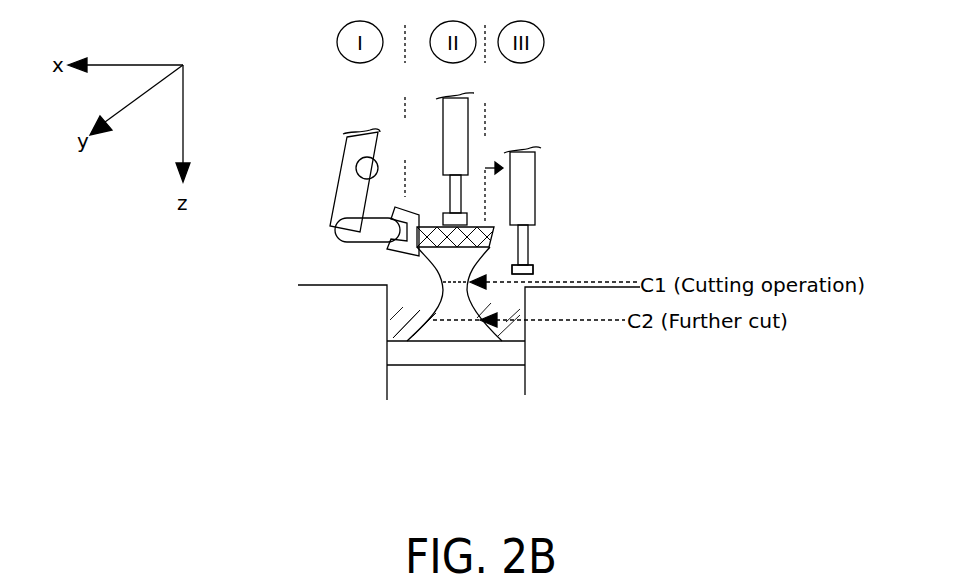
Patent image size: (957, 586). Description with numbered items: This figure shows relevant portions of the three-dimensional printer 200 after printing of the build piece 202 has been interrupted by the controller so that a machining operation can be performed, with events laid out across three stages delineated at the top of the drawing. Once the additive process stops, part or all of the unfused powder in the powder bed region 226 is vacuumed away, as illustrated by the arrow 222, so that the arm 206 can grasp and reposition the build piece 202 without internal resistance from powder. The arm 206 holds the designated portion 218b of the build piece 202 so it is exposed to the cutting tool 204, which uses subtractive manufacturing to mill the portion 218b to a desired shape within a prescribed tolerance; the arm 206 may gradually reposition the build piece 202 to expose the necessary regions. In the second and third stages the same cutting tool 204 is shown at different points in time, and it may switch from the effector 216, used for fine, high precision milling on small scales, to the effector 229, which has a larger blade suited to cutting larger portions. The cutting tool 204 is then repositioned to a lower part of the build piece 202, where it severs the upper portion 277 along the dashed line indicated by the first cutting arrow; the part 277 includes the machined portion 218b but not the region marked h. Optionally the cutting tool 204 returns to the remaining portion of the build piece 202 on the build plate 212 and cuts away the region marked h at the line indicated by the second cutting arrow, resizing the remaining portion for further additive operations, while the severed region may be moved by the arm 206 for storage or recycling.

The 3-D printer 200 is at (264, 74).
The arm 206 is at (345, 190).
The effector 216 is at (446, 215).
The cutting tool 204 is at (470, 132).
The effector 229 is at (534, 271).
The portion of build piece 218b is at (505, 235).
The build piece 202 is at (521, 311).
The upper portion 277 is at (470, 274).
The powder bed region 226 is at (400, 318).
The arrow indicating removal of unfused powder 222 is at (417, 300).
The build plate 212 is at (525, 357).